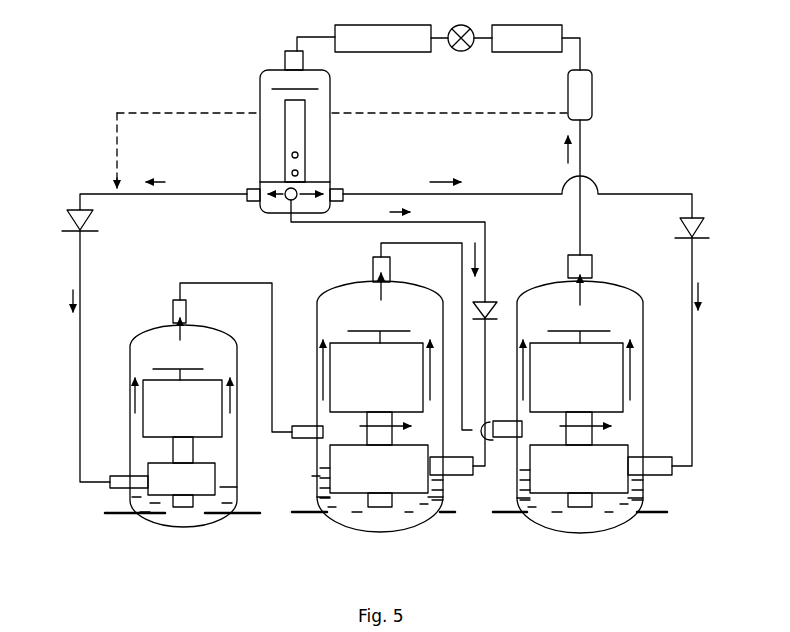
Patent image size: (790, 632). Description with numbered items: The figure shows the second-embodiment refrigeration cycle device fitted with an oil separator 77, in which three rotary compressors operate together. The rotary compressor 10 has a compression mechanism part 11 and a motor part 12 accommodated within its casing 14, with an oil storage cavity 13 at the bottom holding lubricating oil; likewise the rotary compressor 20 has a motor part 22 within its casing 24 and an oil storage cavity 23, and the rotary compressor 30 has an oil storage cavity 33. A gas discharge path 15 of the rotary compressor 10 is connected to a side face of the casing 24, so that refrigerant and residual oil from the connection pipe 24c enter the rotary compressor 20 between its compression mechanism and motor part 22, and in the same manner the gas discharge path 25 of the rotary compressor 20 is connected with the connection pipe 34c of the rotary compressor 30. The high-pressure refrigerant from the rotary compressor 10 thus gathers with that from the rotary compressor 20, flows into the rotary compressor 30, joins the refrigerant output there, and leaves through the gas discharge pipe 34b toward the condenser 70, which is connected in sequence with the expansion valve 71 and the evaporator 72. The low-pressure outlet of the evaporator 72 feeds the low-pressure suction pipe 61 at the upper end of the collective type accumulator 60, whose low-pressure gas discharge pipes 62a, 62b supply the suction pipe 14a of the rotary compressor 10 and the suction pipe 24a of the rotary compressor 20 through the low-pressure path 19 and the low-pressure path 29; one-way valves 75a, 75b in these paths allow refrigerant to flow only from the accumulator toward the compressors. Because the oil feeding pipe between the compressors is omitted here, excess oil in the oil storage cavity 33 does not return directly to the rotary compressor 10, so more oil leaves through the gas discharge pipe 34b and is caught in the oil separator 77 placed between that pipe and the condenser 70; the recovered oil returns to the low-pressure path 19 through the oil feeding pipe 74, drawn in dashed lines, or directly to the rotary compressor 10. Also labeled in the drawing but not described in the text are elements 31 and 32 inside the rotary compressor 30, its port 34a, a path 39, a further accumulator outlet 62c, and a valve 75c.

The rotary compressor 10 is at (148, 424).
The compression mechanism part 11 is at (152, 470).
The motor part 12 is at (136, 418).
The oil storage cavity 13 is at (203, 521).
The casing 14 is at (131, 352).
The suction pipe 14a is at (93, 483).
The gas discharge path 15 is at (216, 284).
The low-pressure path 19 is at (80, 406).
The rotary compressor 20 is at (379, 403).
The motor part 22 is at (330, 377).
The oil storage cavity 23 is at (351, 527).
The casing 24 is at (317, 318).
The suction pipe 24a is at (468, 478).
The connection pipe 24c is at (296, 427).
The gas discharge path 25 is at (406, 250).
The low-pressure path 29 is at (485, 222).
The rotary compressor 30 is at (605, 392).
The compression mechanism 31 is at (629, 446).
The motor 32 is at (625, 370).
The oil storage cavity 33 is at (618, 526).
The suction port 34a is at (672, 473).
The gas discharge pipe 34b is at (592, 258).
The connection pipe 34c is at (508, 440).
The oil return pipe 39 is at (692, 380).
The collective type accumulator 60 is at (285, 144).
The low-pressure suction pipe 61 is at (285, 58).
The low-pressure gas discharge pipe 62a is at (247, 188).
The low-pressure gas discharge pipe 62b is at (336, 186).
The third outlet port 62c is at (284, 204).
The condenser 70 is at (520, 53).
The expansion valve 71 is at (462, 52).
The evaporator 72 is at (370, 53).
The oil feeding pipe 74 is at (466, 114).
The one-way valve 75a is at (72, 212).
The one-way valve 75b is at (518, 283).
The check valve 75c is at (700, 218).
The oil separator 77 is at (592, 118).